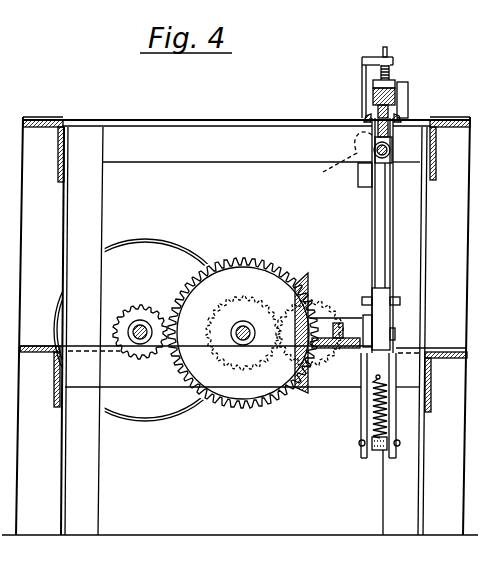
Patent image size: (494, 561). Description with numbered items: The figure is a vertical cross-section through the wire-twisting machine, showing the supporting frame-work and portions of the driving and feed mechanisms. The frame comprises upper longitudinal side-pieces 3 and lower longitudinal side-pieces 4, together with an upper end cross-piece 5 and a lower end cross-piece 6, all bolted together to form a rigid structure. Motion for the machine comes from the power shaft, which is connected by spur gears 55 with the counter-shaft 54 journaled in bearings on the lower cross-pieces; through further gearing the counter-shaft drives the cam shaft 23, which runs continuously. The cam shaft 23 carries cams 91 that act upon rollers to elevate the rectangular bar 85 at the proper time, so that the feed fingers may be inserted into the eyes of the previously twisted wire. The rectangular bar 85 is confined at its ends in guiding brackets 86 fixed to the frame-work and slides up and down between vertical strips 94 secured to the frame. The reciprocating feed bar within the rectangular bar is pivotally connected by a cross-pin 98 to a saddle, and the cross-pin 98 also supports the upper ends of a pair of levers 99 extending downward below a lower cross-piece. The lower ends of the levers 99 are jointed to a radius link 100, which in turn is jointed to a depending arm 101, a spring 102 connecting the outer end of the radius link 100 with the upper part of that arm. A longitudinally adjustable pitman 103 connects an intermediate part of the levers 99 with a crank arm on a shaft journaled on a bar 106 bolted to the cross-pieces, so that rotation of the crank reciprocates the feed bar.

The upper longitudinal side-pieces 3 is at (58, 164).
The lower longitudinal side-pieces 4 is at (431, 376).
The upper end cross-piece 5 is at (246, 141).
The lower end cross-piece 6 is at (243, 376).
The cam shaft 23 is at (374, 158).
The counter-shaft 54 is at (243, 345).
The spur gears 55 is at (137, 307).
The rectangular bar 85 is at (404, 118).
The guiding brackets 86 is at (394, 60).
The cams 91 is at (334, 161).
The vertical strips 94 is at (395, 92).
The cross-pin 98 is at (365, 118).
The levers 99 is at (385, 255).
The radius link 100 is at (377, 452).
The depending arm 101 is at (360, 440).
The spring 102 is at (377, 418).
The pitman 103 is at (390, 317).
The bar 106 is at (335, 349).